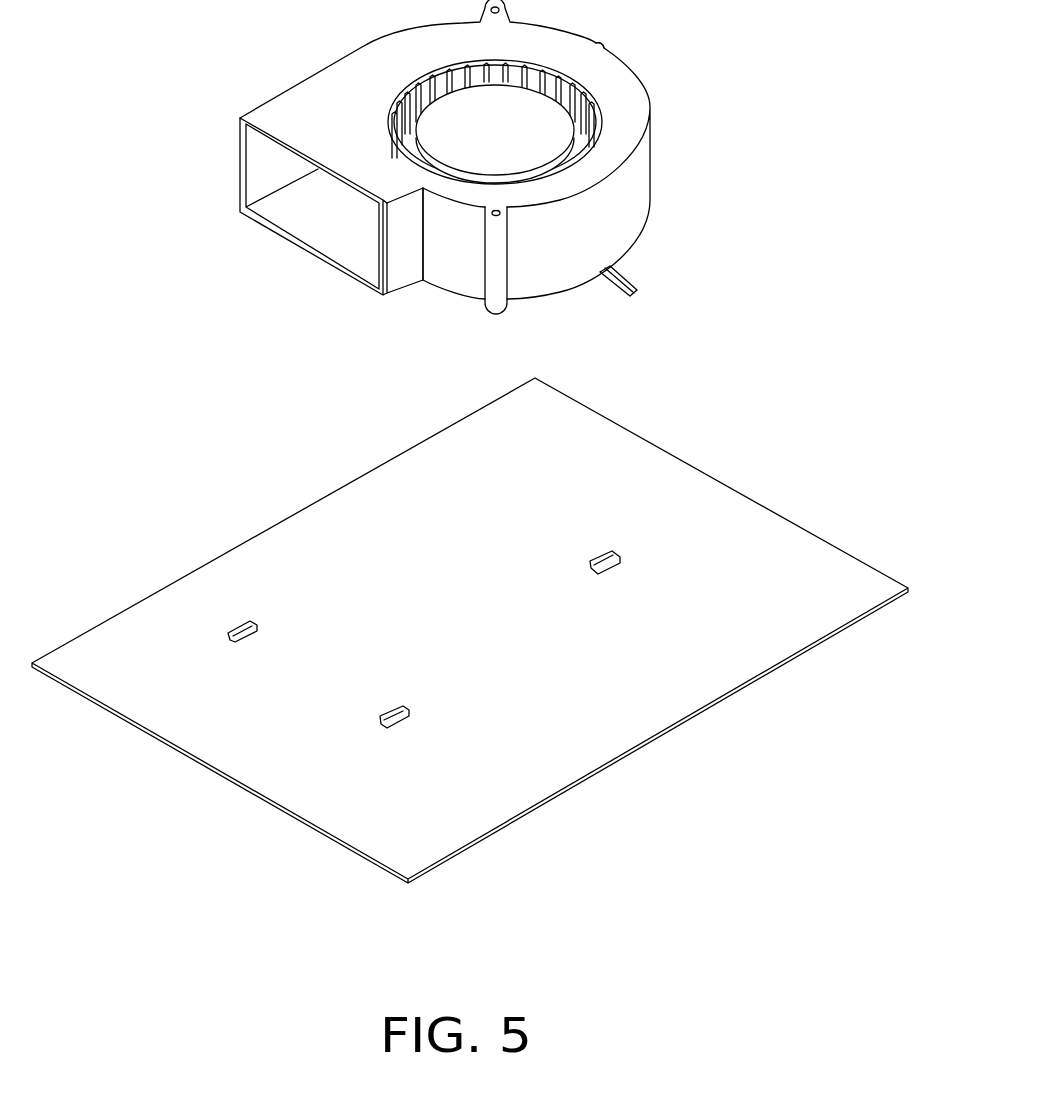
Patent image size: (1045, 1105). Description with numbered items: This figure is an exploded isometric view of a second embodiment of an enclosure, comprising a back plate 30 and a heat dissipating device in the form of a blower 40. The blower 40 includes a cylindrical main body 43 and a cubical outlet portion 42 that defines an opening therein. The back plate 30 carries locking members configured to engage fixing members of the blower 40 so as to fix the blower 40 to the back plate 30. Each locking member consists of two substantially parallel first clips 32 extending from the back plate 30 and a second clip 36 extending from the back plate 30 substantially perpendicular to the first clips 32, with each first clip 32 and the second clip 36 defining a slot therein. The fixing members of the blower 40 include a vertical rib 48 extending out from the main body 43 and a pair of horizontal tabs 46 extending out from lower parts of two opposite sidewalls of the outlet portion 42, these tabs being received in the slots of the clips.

The back plate 30 is at (470, 637).
The first clips 32 is at (238, 628).
The second clip 36 is at (607, 557).
The blower 40 is at (469, 182).
The outlet portion 42 is at (408, 267).
The main body 43 is at (625, 205).
The horizontal tabs 46 is at (387, 297).
The vertical rib 48 is at (603, 48).